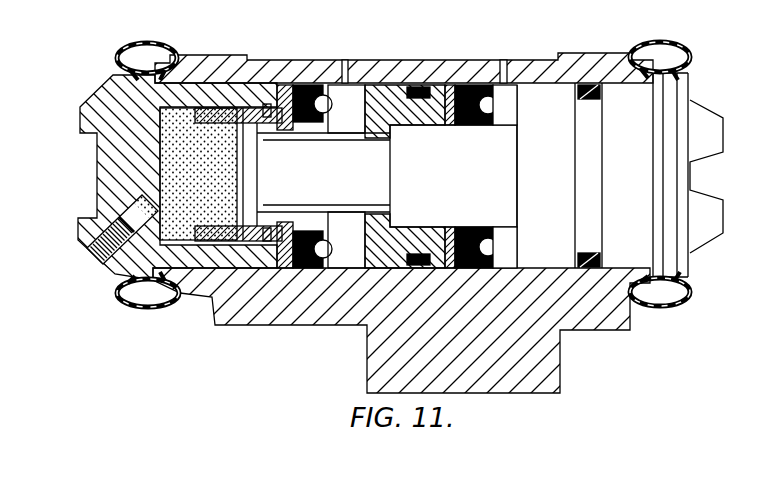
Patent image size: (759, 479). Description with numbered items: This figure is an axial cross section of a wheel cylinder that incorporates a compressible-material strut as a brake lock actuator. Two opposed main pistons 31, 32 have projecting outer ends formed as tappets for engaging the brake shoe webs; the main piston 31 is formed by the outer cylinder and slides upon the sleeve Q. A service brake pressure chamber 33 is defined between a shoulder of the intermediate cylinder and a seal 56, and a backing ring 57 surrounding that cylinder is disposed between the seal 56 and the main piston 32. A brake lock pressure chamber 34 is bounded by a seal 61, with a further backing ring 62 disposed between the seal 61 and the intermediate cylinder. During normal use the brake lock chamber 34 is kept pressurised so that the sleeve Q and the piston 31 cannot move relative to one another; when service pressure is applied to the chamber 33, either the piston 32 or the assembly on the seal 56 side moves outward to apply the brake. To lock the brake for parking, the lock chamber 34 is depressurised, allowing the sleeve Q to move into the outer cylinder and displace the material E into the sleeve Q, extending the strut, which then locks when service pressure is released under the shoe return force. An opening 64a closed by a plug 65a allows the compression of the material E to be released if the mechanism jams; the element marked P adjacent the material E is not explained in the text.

The main piston 31 is at (113, 177).
The main piston 32 is at (710, 123).
The service brake pressure chamber 33 is at (507, 110).
The brake lock pressure chamber 34 is at (353, 102).
The seal 56 is at (477, 228).
The backing ring 57 is at (449, 228).
The seal 61 is at (311, 87).
The backing ring 62 is at (285, 85).
The opening 64a is at (143, 201).
The plug 65a is at (92, 233).
The material E is at (227, 170).
The piston plate P is at (248, 194).
The sleeve Q is at (393, 103).